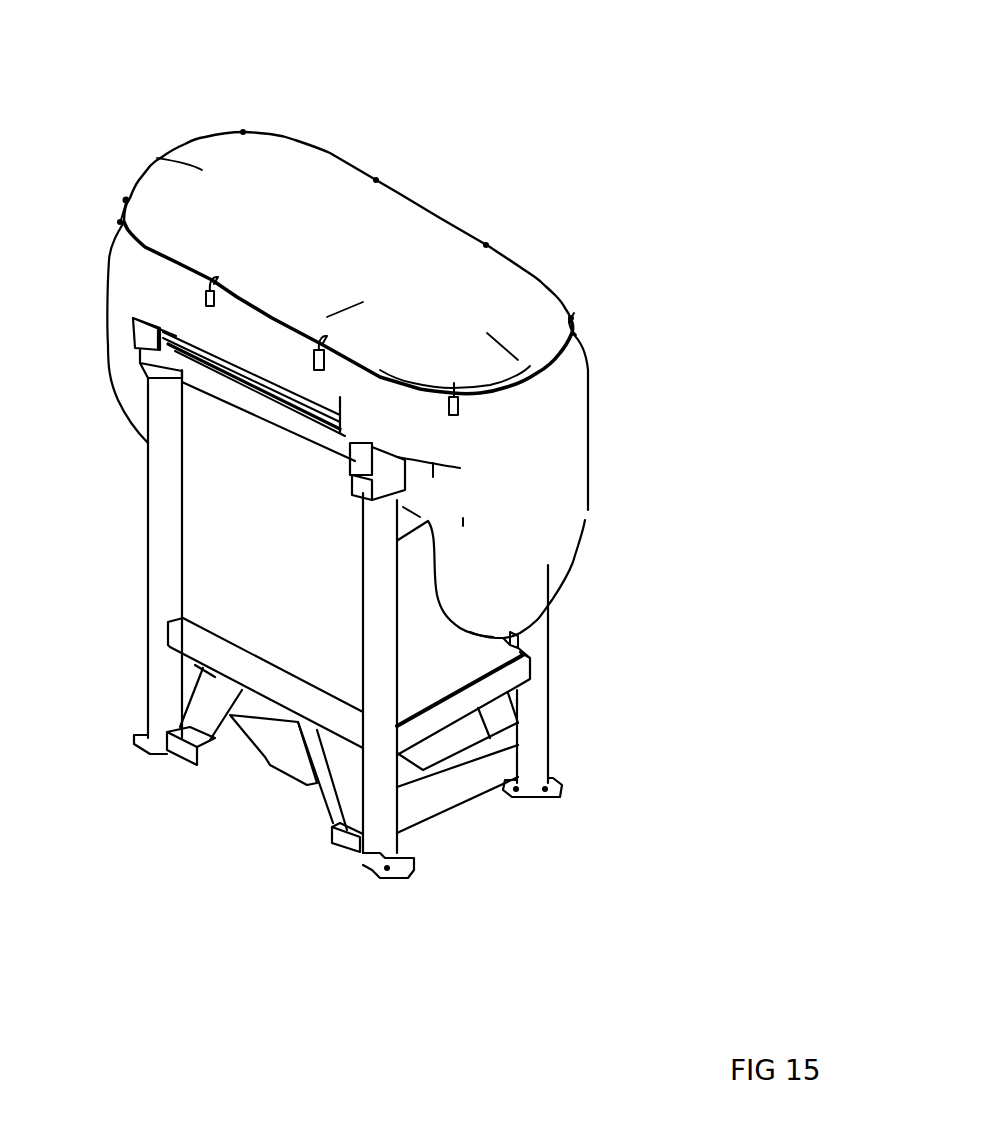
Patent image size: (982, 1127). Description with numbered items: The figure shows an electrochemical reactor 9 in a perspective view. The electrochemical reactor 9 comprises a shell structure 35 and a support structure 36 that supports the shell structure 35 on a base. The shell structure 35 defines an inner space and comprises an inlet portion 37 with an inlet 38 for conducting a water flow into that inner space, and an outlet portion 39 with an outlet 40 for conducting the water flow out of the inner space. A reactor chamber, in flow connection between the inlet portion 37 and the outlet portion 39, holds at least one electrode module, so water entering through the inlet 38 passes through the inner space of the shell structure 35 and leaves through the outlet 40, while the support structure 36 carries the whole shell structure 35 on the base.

The electrochemical reactor 9 is at (547, 118).
The shell structure 35 is at (641, 443).
The support structure 36 is at (580, 707).
The inlet portion 37 is at (172, 810).
The inlet 38 is at (283, 777).
The outlet portion 39 is at (527, 547).
The outlet 40 is at (510, 638).